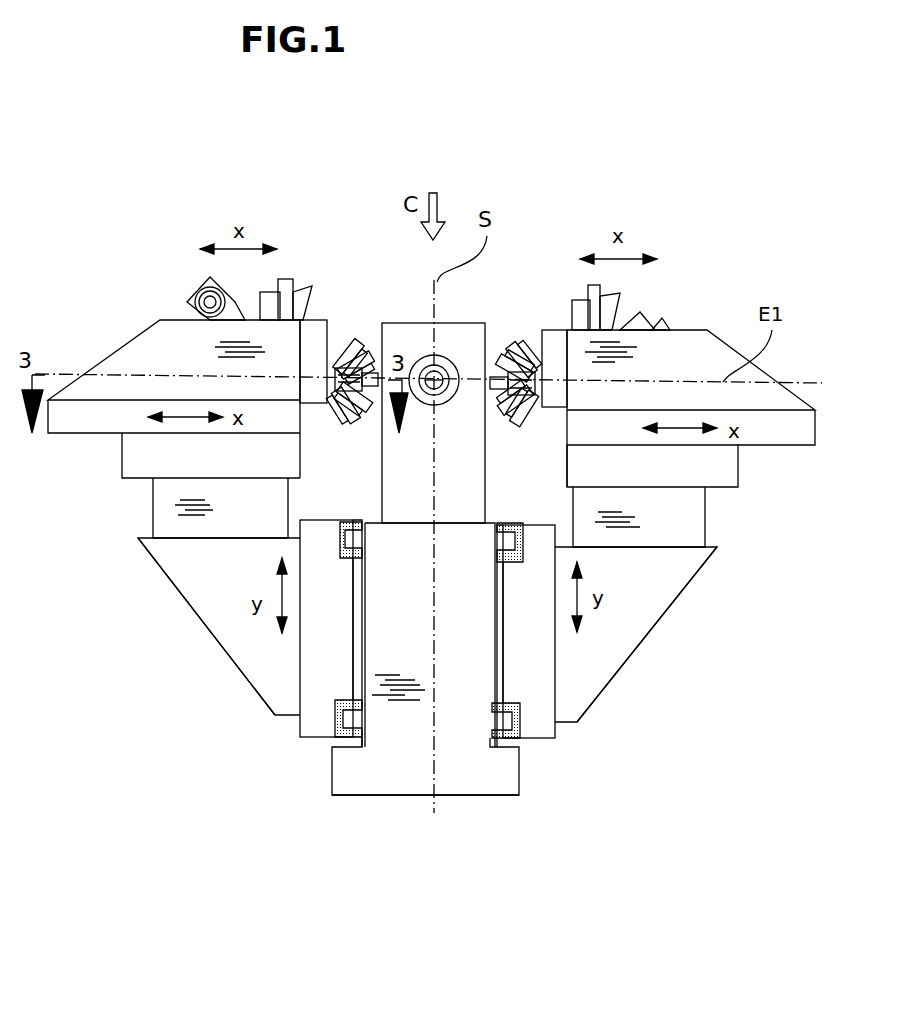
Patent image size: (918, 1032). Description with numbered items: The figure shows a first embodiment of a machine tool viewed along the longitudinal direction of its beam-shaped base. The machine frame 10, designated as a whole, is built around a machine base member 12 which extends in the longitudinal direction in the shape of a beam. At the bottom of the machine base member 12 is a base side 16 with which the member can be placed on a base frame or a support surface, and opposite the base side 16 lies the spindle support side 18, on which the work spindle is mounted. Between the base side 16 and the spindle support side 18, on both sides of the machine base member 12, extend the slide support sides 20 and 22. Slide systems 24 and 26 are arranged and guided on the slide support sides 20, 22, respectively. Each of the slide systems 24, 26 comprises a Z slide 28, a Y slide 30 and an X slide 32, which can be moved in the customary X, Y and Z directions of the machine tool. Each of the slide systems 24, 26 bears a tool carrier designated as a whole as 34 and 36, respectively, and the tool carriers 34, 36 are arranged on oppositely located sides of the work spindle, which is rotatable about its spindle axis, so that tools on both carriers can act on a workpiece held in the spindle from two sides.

The machine frame 10 is at (380, 768).
The machine base member 12 is at (450, 740).
The base side 16 is at (508, 797).
The spindle support side 18 is at (440, 524).
The slide support side 20 is at (362, 680).
The slide support side 22 is at (494, 683).
The slide system 24 is at (145, 577).
The slide system 26 is at (716, 590).
The Z slide 28 is at (317, 640).
The Y slide 30 is at (203, 602).
The X slide 32 is at (79, 424).
The tool carrier 34 is at (167, 345).
The tool carrier 36 is at (679, 345).